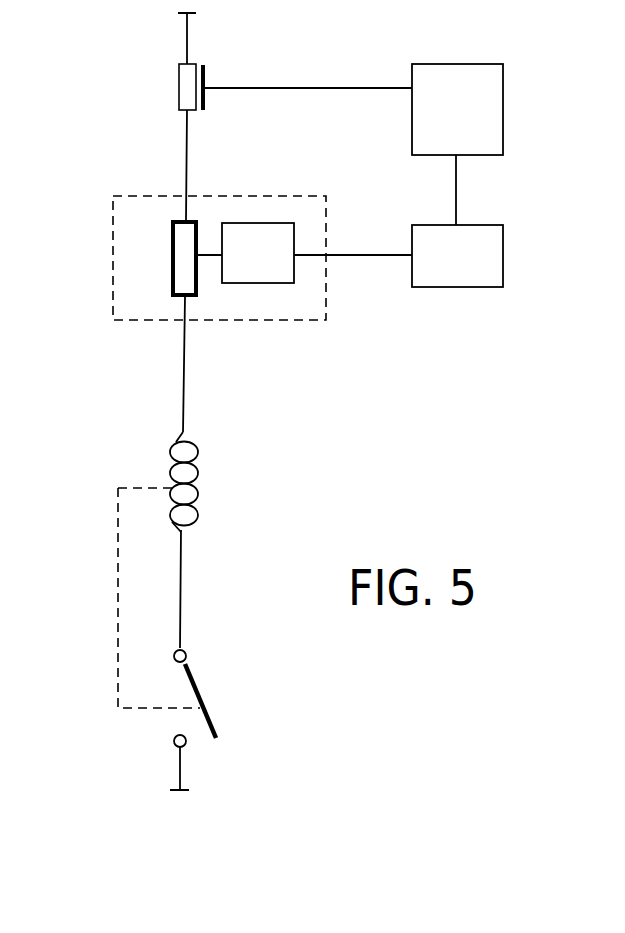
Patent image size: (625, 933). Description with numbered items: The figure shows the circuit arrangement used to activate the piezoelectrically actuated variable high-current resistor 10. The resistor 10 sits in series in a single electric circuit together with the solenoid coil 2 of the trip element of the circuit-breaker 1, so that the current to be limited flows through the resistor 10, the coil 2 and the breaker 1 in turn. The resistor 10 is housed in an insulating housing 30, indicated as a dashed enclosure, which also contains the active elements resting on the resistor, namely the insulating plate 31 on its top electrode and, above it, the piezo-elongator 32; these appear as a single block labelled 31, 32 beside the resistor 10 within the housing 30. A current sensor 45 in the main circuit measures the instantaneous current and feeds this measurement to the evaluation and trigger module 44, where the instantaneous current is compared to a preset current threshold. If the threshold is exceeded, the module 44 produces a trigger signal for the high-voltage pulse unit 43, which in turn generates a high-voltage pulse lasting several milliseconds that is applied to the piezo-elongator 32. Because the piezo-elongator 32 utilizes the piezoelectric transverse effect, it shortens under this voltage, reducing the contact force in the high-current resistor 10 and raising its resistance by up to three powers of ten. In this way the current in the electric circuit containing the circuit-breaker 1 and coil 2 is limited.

The circuit-breaker 1 is at (201, 700).
The solenoid coil 2 is at (198, 489).
The variable high-current resistor 10 is at (158, 253).
The insulating housing 30 is at (326, 293).
The insulating plate 31 is at (282, 212).
The piezo-elongator 32 is at (241, 234).
The high-voltage pulse unit 43 is at (477, 258).
The evaluation and trigger module 44 is at (480, 121).
The current sensor 45 is at (205, 74).